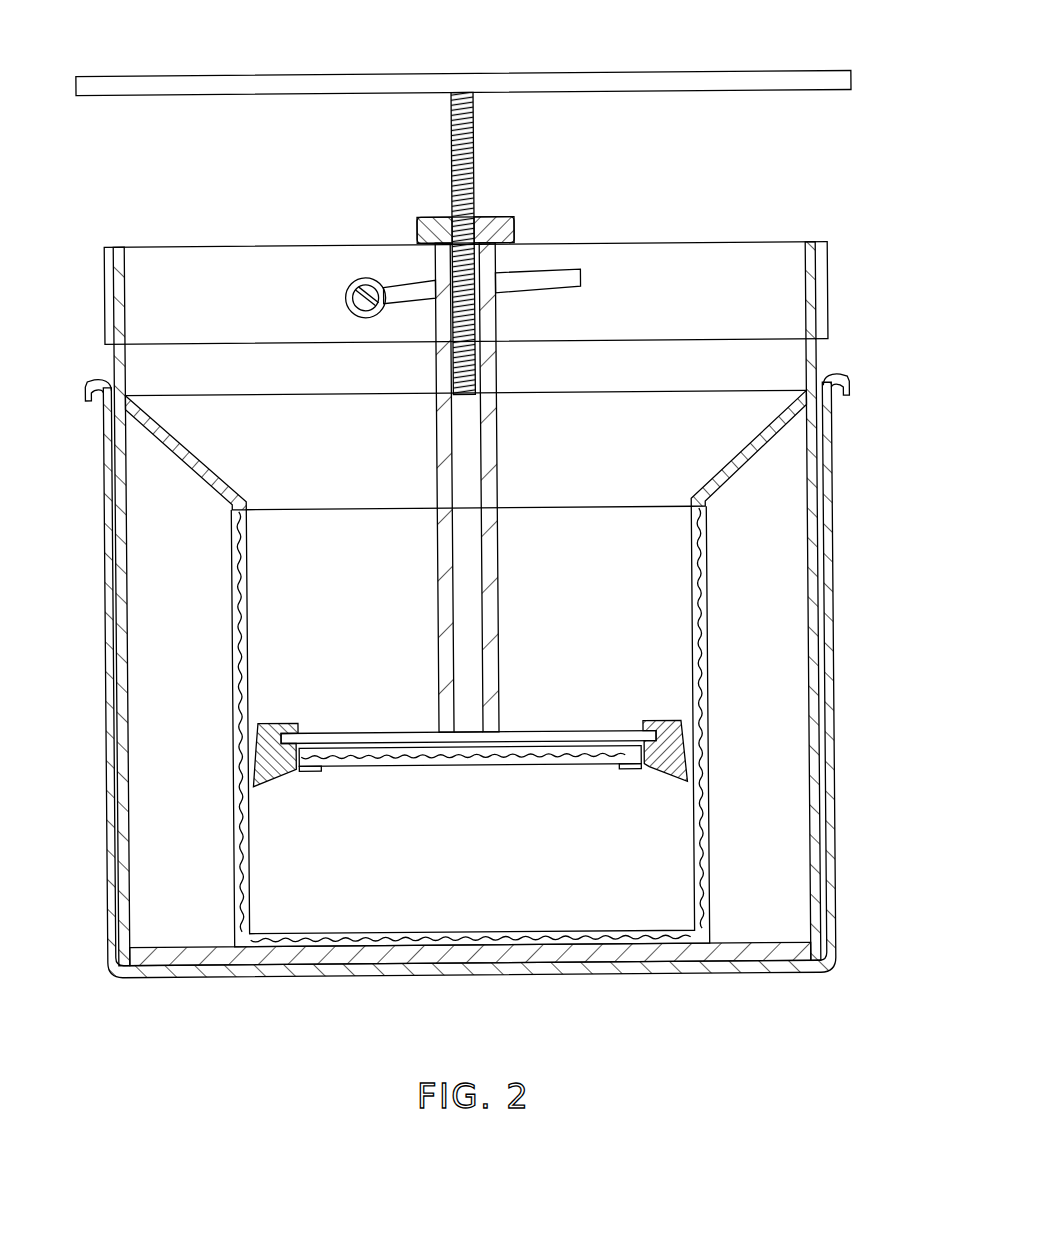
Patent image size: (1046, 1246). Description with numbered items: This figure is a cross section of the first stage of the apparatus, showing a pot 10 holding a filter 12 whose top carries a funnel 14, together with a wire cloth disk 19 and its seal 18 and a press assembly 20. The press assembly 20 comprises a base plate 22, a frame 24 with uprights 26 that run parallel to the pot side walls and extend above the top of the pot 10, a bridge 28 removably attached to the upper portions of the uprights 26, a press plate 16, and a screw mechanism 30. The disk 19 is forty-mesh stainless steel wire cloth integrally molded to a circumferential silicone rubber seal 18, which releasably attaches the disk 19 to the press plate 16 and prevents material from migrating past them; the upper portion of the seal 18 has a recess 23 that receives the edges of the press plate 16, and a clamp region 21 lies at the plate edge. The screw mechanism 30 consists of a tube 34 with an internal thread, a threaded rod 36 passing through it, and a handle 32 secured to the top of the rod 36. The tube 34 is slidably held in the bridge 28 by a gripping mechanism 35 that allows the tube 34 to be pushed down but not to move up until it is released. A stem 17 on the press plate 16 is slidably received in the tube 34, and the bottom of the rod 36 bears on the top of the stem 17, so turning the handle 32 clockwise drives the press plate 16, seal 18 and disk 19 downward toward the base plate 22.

The pot 10 is at (110, 538).
The filter 12 is at (236, 683).
The funnel 14 is at (758, 445).
The press plate 16 is at (540, 742).
The stem 17 is at (467, 612).
The seal 18 is at (770, 794).
The wire cloth disk 19 is at (337, 828).
The press assembly 20 is at (312, 205).
The left clamp 21 is at (257, 755).
The base plate 22 is at (425, 937).
The recess 23 is at (159, 659).
The frame 24 is at (147, 817).
The uprights 26 is at (118, 374).
The bridge 28 is at (185, 247).
The screw mechanism 30 is at (452, 238).
The handle 32 is at (680, 82).
The tube 34 is at (498, 435).
The gripping mechanism 35 is at (407, 290).
The threaded rod 36 is at (478, 180).